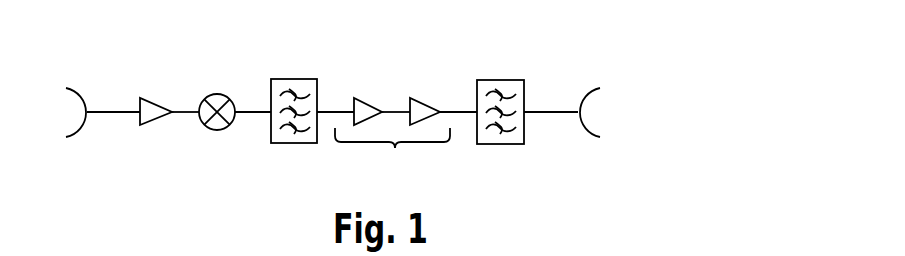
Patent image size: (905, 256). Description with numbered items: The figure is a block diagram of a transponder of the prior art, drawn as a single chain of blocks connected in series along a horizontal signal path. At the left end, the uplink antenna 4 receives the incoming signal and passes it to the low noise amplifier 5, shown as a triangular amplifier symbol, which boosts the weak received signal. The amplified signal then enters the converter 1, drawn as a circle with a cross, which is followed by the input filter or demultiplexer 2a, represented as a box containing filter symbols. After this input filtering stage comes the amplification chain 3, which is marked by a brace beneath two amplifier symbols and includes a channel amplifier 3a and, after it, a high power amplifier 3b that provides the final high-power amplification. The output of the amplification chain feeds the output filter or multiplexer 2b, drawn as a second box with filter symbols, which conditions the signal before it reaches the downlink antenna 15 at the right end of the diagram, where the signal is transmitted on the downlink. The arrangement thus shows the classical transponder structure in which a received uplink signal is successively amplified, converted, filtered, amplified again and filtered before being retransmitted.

The uplink antenna 4 is at (83, 93).
The low noise amplifier 5 is at (150, 106).
The converter 1 is at (217, 102).
The input filter or demultiplexer 2a is at (302, 90).
The amplification chain 3 is at (392, 106).
The channel amplifier 3a is at (372, 105).
The high power amplifier 3b is at (430, 101).
The output filter or multiplexer 2b is at (510, 88).
The downlink antenna 15 is at (590, 89).